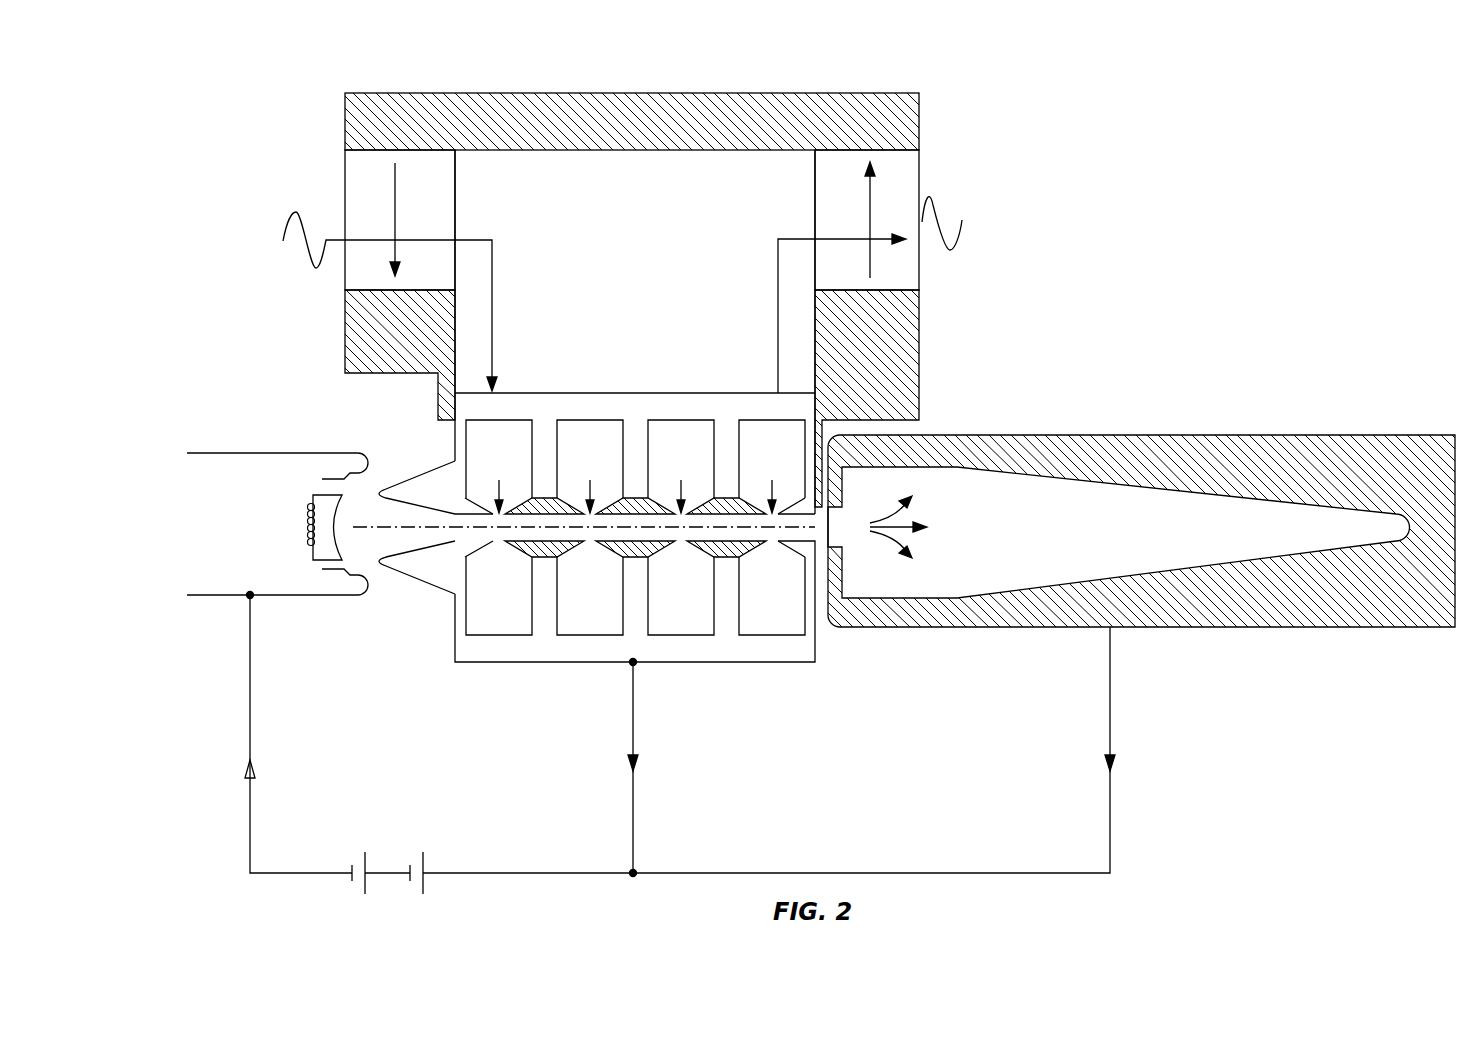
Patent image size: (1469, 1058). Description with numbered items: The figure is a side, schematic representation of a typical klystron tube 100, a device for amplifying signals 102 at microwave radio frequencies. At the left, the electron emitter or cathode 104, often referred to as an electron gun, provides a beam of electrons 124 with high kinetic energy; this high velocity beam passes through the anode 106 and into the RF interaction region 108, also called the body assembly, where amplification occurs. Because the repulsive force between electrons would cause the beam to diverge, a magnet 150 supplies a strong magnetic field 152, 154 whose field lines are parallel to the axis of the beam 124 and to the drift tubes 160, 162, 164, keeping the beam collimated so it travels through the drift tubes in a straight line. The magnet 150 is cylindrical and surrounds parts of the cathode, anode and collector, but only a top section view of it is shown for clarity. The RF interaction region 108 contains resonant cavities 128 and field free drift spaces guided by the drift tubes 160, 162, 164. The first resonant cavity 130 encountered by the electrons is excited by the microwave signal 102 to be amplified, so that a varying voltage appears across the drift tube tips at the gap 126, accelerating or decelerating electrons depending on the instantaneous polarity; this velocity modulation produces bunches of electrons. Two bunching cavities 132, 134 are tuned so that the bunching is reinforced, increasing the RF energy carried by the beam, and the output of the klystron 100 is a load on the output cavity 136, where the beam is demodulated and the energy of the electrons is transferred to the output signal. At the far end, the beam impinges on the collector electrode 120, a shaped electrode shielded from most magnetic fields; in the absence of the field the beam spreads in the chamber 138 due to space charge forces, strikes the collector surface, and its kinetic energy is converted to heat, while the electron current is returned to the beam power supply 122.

The klystron tube 100 is at (218, 692).
The signal 102 is at (494, 252).
The cathode 104 is at (256, 453).
The anode 106 is at (443, 470).
The RF interaction region 108 is at (585, 662).
The collector electrode 120 is at (1335, 468).
The beam power supply 122 is at (370, 890).
The electron beam 124 is at (368, 527).
The gap 126 is at (537, 559).
The resonant cavities 128 is at (682, 420).
The first resonant cavity 130 is at (500, 635).
The bunching cavity 132 is at (593, 635).
The bunching cavity 134 is at (690, 635).
The output cavity 136 is at (778, 635).
The chamber 138 is at (1160, 530).
The magnet 150 is at (345, 167).
The magnetic field 152 is at (406, 93).
The magnetic field 154 is at (900, 204).
The drift tube 160 is at (550, 562).
The drift tube 162 is at (640, 562).
The drift tube 164 is at (730, 562).